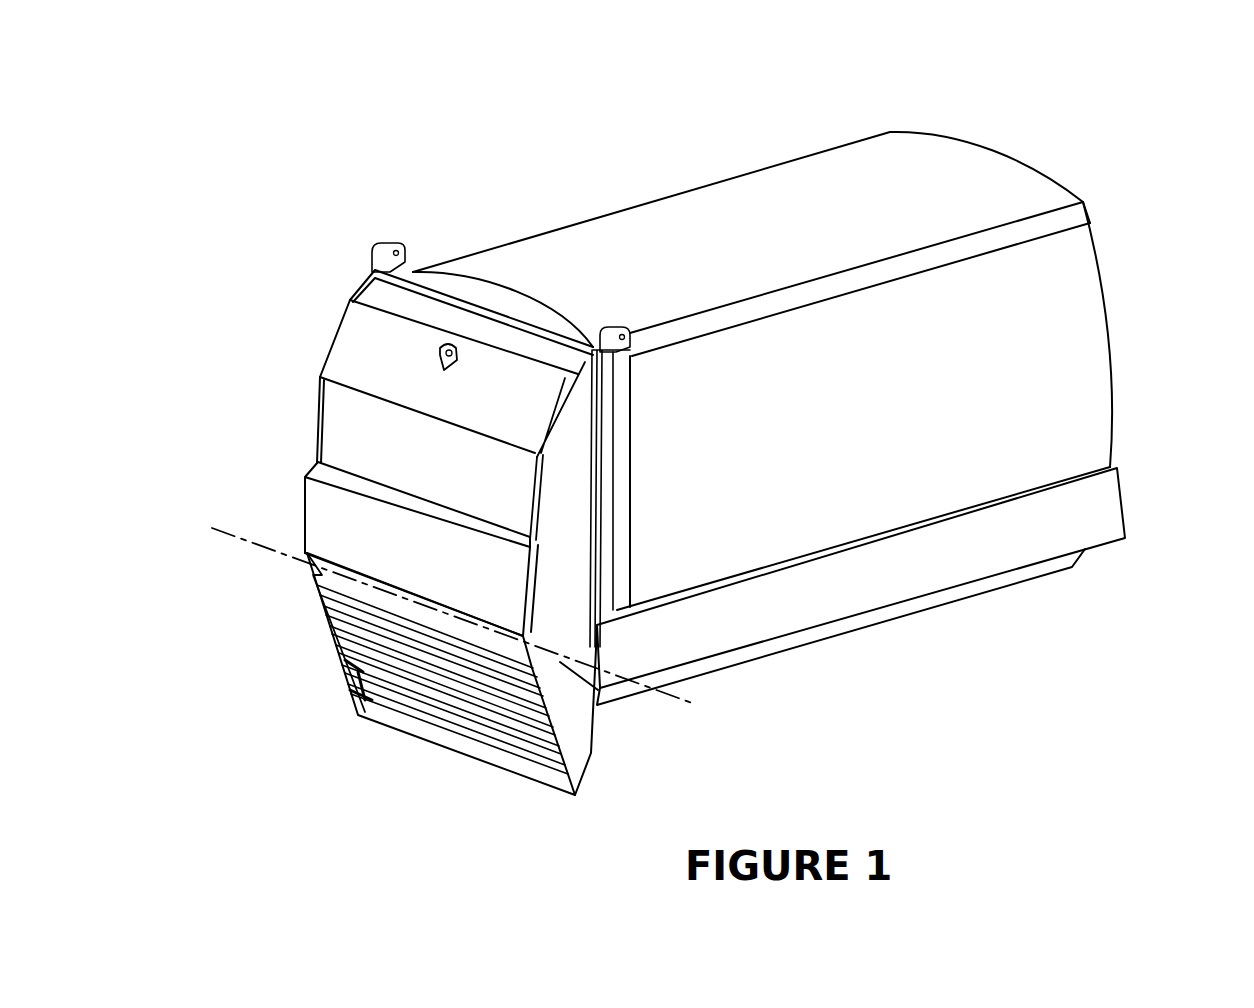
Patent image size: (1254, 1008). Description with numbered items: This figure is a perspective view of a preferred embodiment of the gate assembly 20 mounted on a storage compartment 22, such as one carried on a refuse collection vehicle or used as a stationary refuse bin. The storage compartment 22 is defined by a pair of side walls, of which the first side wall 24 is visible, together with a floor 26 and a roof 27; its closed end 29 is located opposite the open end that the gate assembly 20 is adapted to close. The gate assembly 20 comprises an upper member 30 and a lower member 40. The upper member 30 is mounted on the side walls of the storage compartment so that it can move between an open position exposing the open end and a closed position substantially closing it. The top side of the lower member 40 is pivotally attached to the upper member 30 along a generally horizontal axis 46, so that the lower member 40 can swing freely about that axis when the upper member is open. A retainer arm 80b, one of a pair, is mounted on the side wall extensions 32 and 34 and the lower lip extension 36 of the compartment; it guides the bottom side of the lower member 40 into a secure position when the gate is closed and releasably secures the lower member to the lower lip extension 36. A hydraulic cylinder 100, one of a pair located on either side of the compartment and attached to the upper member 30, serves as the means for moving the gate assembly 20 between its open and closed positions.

The gate assembly 20 is at (332, 335).
The storage compartment 22 is at (935, 167).
The first side wall 24 is at (919, 397).
The floor 26 is at (842, 636).
The roof 27 is at (759, 251).
The closed end 29 is at (1115, 342).
The upper member 30 is at (335, 415).
The side wall extension 32 is at (577, 723).
The side wall extension 34 is at (337, 647).
The lower lip extension 36 is at (490, 752).
The lower member 40 is at (447, 682).
The generally horizontal axis 46 is at (242, 535).
The retainer arm 80b is at (348, 702).
The hydraulic cylinder 100 is at (622, 400).